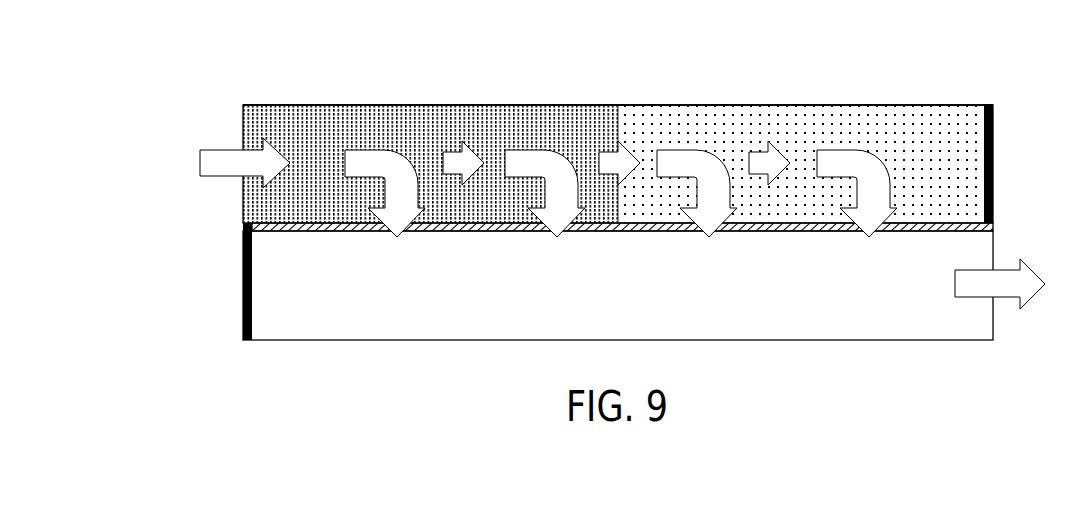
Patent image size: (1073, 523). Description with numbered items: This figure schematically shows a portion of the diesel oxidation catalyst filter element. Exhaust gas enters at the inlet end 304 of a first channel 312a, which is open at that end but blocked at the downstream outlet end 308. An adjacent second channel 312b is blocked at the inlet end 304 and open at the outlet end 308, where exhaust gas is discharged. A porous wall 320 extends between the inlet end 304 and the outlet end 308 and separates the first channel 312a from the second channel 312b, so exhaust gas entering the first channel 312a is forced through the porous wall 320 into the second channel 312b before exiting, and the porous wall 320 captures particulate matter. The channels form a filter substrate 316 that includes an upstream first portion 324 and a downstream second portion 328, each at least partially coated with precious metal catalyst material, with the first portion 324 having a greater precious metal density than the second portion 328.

The inlet end 304 is at (243, 118).
The outlet end 308 is at (993, 108).
The first channel 312a is at (257, 200).
The second channel 312b is at (862, 341).
The filter substrate 316 is at (580, 87).
The porous wall 320 is at (448, 232).
The first portion 324 is at (337, 100).
The second portion 328 is at (862, 100).